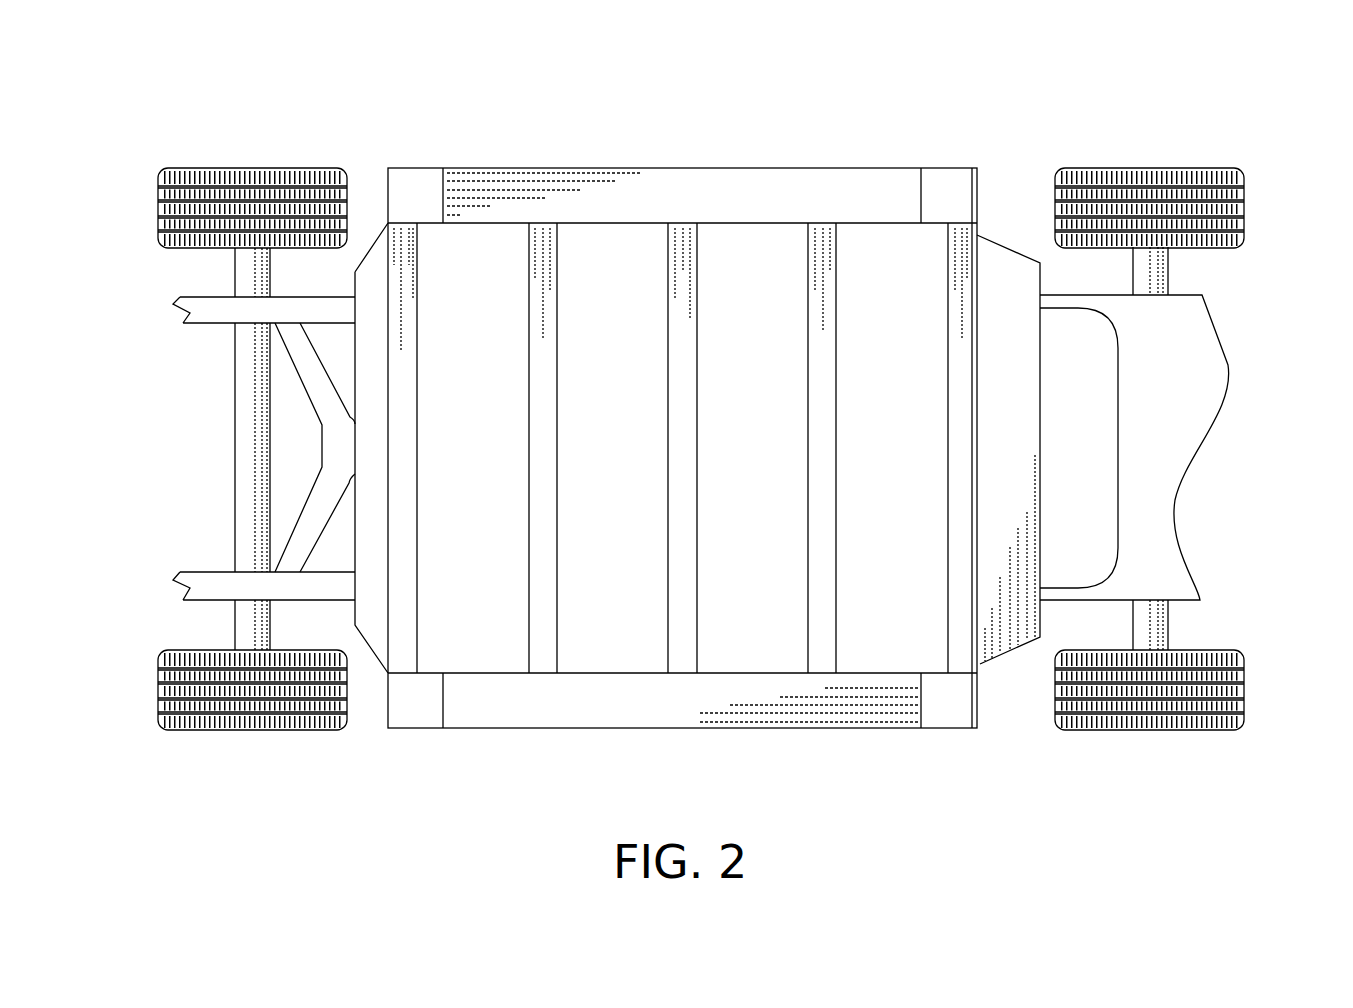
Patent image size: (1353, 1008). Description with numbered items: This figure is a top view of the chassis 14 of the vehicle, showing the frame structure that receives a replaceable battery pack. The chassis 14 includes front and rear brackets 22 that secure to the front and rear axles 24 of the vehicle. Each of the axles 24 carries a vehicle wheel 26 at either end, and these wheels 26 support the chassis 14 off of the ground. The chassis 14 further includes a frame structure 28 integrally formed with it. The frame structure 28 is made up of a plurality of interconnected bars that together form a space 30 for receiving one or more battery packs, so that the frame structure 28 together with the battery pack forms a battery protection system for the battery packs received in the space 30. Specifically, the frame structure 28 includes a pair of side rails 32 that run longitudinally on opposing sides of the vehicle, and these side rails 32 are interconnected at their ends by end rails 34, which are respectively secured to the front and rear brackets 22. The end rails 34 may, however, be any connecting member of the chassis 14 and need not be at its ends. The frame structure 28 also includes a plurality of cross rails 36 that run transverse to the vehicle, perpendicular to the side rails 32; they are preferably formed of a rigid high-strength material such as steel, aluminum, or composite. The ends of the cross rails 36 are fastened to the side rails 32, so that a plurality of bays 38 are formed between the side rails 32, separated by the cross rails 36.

The chassis 14 is at (430, 100).
The front and rear brackets 22 is at (368, 357).
The front and rear axles 24 is at (250, 505).
The vehicle wheels 26 is at (205, 207).
The frame structure 28 is at (767, 162).
The space 30 is at (893, 620).
The side rails 32 is at (618, 198).
The end rails 34 is at (405, 408).
The cross rails 36 is at (540, 603).
The bays 38 is at (485, 645).